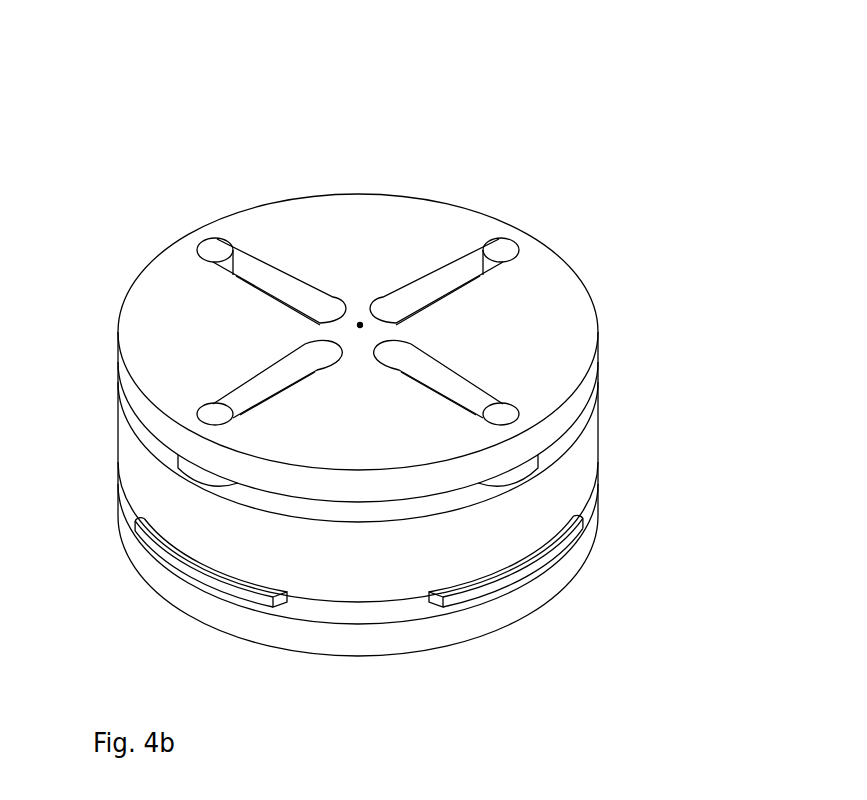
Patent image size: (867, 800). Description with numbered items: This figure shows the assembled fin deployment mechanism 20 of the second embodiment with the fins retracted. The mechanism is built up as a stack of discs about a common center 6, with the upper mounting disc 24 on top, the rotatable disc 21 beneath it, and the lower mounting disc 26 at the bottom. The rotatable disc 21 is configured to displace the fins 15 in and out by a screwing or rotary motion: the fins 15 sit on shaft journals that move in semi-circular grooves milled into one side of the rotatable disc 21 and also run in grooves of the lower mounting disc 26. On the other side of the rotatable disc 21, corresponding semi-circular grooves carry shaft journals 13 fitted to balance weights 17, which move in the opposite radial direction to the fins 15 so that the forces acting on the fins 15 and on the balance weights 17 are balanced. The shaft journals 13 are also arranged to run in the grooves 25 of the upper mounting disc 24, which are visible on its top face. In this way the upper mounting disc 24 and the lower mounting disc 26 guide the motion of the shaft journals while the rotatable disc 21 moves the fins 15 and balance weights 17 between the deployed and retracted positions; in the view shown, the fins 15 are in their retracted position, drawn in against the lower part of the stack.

The fin deployment mechanism 20 is at (95, 50).
The center axis / central opening 6 is at (360, 325).
The shaft journals 13 is at (212, 250).
The upper mounting disc 24 is at (503, 303).
The grooves 25 is at (249, 272).
The balance weights 17 is at (515, 470).
The rotatable disc 21 is at (515, 520).
The fins 15 is at (460, 600).
The lower mounting disc 26 is at (520, 603).